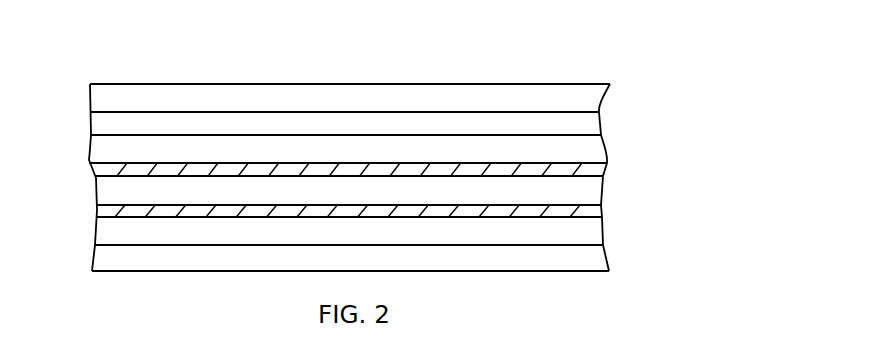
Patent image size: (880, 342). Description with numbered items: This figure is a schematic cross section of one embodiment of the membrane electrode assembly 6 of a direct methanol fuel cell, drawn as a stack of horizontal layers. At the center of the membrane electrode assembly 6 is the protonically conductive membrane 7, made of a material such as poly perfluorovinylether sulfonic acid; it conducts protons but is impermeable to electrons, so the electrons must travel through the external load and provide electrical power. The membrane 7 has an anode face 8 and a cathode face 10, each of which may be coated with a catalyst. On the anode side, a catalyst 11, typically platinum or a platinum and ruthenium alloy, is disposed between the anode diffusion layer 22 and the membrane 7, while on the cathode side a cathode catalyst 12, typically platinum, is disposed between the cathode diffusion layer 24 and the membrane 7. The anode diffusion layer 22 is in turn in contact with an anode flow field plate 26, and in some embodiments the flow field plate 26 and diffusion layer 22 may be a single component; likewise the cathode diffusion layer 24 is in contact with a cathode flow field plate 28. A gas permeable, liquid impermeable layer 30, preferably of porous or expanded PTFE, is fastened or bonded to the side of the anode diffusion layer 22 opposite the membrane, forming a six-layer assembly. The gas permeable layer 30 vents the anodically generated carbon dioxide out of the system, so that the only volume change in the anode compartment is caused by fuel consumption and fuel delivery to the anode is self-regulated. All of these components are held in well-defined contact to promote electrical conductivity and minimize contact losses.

The membrane electrode assembly 6 is at (686, 55).
The protonically conductive membrane 7 is at (594, 200).
The anode face 8 is at (101, 173).
The cathode face 10 is at (107, 206).
The catalyst 11 is at (603, 168).
The cathode catalyst 12 is at (598, 209).
The anode diffusion layer 22 is at (276, 158).
The cathode diffusion layer 24 is at (293, 241).
The anode flow field plate 26 is at (100, 96).
The cathode flow field plate 28 is at (100, 258).
The gas permeable layer 30 is at (100, 122).